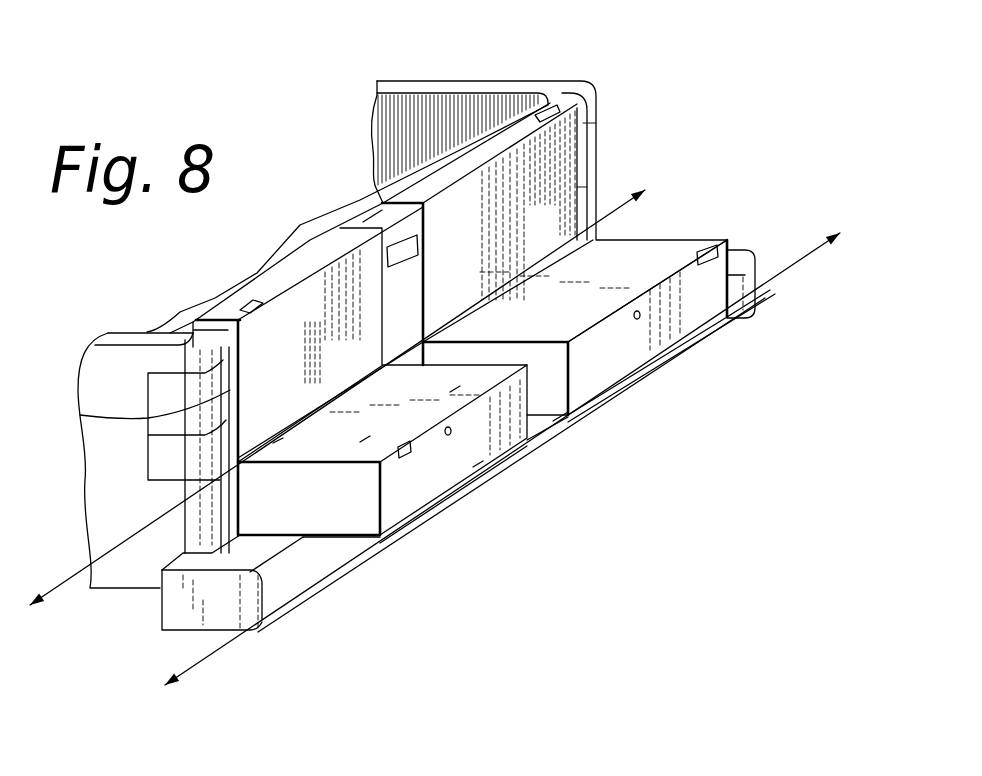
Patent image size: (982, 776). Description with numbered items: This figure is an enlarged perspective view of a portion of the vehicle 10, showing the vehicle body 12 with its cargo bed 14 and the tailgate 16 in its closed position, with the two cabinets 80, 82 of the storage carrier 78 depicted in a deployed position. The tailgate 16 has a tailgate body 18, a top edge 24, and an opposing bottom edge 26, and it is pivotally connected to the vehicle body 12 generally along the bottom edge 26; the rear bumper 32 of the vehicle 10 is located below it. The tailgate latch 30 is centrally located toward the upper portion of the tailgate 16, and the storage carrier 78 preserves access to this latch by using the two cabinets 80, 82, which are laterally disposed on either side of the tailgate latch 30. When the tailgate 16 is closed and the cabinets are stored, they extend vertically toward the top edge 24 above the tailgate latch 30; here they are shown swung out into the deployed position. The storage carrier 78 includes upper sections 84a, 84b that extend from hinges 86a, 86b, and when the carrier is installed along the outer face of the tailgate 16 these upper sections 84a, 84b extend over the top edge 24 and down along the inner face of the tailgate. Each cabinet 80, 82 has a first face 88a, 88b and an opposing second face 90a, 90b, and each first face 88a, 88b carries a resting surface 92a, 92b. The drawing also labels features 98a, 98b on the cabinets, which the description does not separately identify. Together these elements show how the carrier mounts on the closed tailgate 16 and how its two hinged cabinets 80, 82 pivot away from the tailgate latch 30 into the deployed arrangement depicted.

The cargo bed 14 is at (321, 100).
The vehicle 10 is at (408, 84).
The vehicle body 12 is at (476, 84).
The top edge 24 is at (383, 203).
The tailgate 16 is at (363, 222).
The tailgate latch 30 is at (340, 245).
The storage carrier 78 is at (276, 276).
The upper section 84a is at (308, 334).
The upper section 84b is at (487, 234).
The tailgate body 18 is at (80, 415).
The rear bumper 32 is at (173, 607).
The bottom edge 26 is at (237, 540).
The cabinet 80 is at (435, 485).
The cabinet 82 is at (617, 382).
The hinge 86a is at (273, 443).
The hinge 86b is at (470, 285).
The first face 88a is at (450, 392).
The first face 88b is at (652, 247).
The second face 90a is at (352, 543).
The second face 90b is at (553, 421).
The resting surface 92a is at (360, 442).
The resting surface 92b is at (692, 245).
The first end cap 98a is at (473, 467).
The second end cap 98b is at (710, 302).